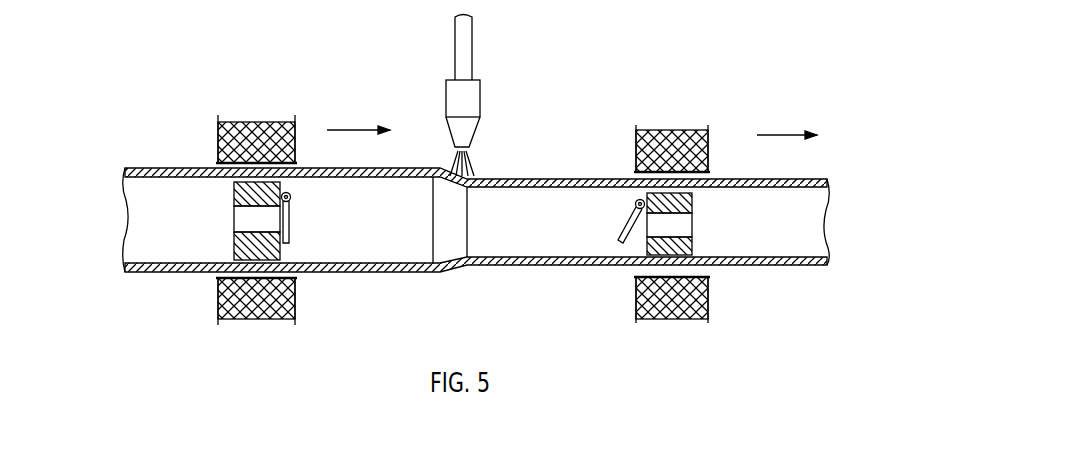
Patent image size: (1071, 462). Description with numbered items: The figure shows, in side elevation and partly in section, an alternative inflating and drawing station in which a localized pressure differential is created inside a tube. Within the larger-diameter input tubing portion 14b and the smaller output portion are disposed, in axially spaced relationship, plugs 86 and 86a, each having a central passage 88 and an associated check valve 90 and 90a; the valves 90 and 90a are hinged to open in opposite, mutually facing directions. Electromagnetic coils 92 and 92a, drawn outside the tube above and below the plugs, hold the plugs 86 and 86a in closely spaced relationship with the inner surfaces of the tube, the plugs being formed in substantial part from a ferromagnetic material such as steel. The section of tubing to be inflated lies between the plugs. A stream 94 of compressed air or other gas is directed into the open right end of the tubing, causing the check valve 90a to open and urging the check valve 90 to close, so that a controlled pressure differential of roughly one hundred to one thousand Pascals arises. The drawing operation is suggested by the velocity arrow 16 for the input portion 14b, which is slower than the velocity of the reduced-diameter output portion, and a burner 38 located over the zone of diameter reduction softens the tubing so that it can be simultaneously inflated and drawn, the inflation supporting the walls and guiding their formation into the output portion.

The tubing portion 14b is at (163, 168).
The electromagnetic coil 92 is at (218, 143).
The electromagnetic coil 92a is at (636, 150).
The plug 86 is at (234, 195).
The plug 86a is at (694, 203).
The central passage 88 is at (244, 221).
The check valve 90 is at (290, 240).
The check valve 90a is at (622, 235).
The stream of compressed air 94 is at (298, 237).
The velocity V1 of conduit movement 16 is at (362, 128).
The burner 38 is at (480, 96).